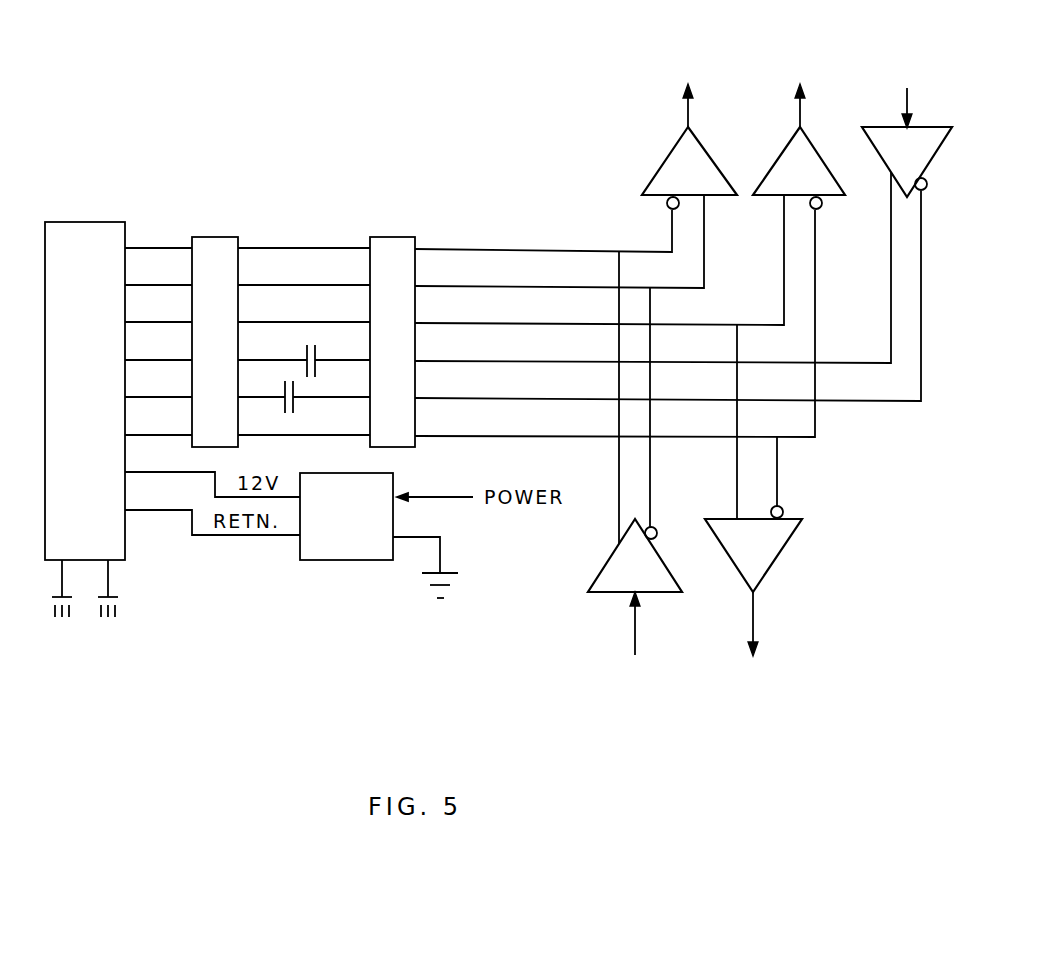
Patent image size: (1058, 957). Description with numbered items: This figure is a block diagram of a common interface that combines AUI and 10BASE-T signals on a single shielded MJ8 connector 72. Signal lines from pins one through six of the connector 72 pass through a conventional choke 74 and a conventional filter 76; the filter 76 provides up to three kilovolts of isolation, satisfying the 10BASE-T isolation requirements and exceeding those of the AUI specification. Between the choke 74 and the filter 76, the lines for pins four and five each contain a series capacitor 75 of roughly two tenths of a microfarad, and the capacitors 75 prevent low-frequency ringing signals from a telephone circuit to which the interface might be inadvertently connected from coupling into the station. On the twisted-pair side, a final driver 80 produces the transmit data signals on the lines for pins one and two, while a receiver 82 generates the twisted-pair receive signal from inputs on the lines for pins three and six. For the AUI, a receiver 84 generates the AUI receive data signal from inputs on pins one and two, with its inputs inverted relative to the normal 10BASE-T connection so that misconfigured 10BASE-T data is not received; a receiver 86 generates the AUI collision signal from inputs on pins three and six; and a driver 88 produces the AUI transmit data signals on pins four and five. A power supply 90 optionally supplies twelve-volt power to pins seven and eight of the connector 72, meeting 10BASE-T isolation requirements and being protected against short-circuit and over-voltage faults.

The shielded MJ8 connector 72 is at (85, 359).
The choke 74 is at (215, 310).
The series capacitor 75 is at (300, 383).
The filter 76 is at (392, 310).
The final driver 80 is at (643, 607).
The receiver 82 is at (749, 577).
The AUI receiver 84 is at (697, 144).
The receiver 86 is at (808, 144).
The driver 88 is at (898, 112).
The power supply 90 is at (346, 551).